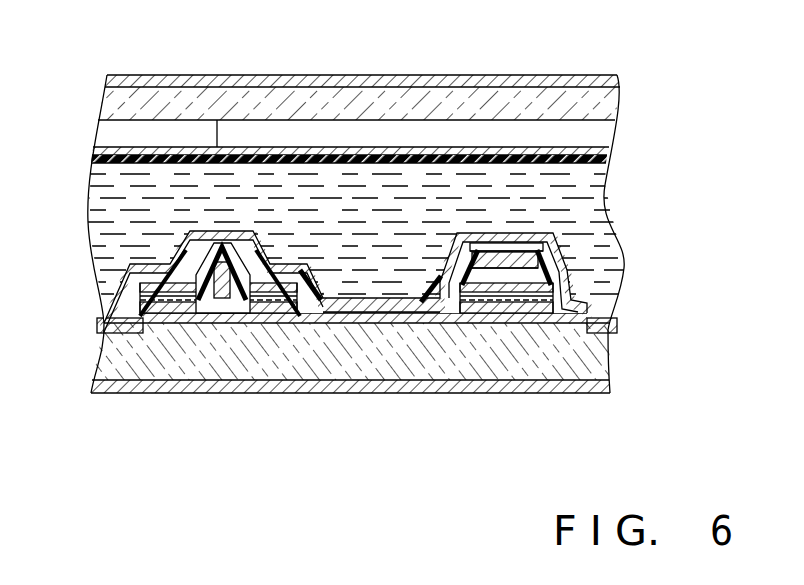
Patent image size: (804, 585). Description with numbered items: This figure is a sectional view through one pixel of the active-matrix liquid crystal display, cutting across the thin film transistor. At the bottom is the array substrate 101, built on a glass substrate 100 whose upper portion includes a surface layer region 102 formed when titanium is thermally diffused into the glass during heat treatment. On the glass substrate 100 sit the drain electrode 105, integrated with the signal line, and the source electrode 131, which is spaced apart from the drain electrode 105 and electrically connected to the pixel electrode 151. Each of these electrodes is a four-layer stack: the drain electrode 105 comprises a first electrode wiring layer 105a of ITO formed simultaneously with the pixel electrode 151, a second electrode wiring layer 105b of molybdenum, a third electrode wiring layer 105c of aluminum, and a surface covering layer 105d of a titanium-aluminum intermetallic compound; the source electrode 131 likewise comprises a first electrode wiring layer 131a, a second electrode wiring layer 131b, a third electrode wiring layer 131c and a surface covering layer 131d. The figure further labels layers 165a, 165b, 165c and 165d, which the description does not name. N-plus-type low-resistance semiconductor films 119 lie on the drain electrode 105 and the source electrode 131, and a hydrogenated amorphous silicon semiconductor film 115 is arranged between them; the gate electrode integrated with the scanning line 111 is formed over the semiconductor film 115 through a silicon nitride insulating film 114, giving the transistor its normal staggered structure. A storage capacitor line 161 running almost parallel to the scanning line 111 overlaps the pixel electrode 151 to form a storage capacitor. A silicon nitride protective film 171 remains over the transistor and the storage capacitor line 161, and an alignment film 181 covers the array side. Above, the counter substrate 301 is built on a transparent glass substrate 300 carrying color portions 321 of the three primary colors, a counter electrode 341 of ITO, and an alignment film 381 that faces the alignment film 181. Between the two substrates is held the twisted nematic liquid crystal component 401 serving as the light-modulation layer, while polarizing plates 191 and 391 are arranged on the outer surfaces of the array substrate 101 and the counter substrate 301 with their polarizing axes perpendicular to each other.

The glass substrate 100 is at (607, 368).
The array substrate 101 is at (656, 350).
The surface layer region 102 is at (100, 332).
The drain electrode 105 is at (192, 419).
The first electrode wiring layer 105a is at (132, 318).
The second electrode wiring layer 105b is at (122, 322).
The third electrode wiring layer 105c is at (114, 324).
The surface covering layer 105d is at (108, 327).
The scanning line 111 is at (217, 236).
The insulating film 114 is at (257, 250).
The semiconductor film 115 is at (198, 313).
The low-resistance semiconductor films 119 is at (145, 263).
The source electrode 131 is at (388, 404).
The first electrode wiring layer 131a is at (233, 312).
The second electrode wiring layer 131b is at (258, 325).
The third electrode wiring layer 131c is at (245, 312).
The surface covering layer 131d is at (236, 312).
The pixel electrode 151 is at (402, 315).
The storage capacitor line 161 is at (548, 257).
The first source layer 165a is at (503, 305).
The second source layer 165b is at (468, 300).
The third source layer 165c is at (458, 300).
The fourth source layer 165d is at (443, 300).
The protective film 171 is at (233, 238).
The alignment film 181 is at (498, 232).
The polarizing plate 191 is at (590, 393).
The transparent glass substrate 300 is at (622, 95).
The counter substrate 301 is at (682, 88).
The color portions 321 is at (410, 133).
The counter electrode 341 is at (587, 132).
The alignment film 381 is at (608, 158).
The polarizing plate 391 is at (577, 85).
The twisted nematic liquid crystal component 401 is at (598, 183).